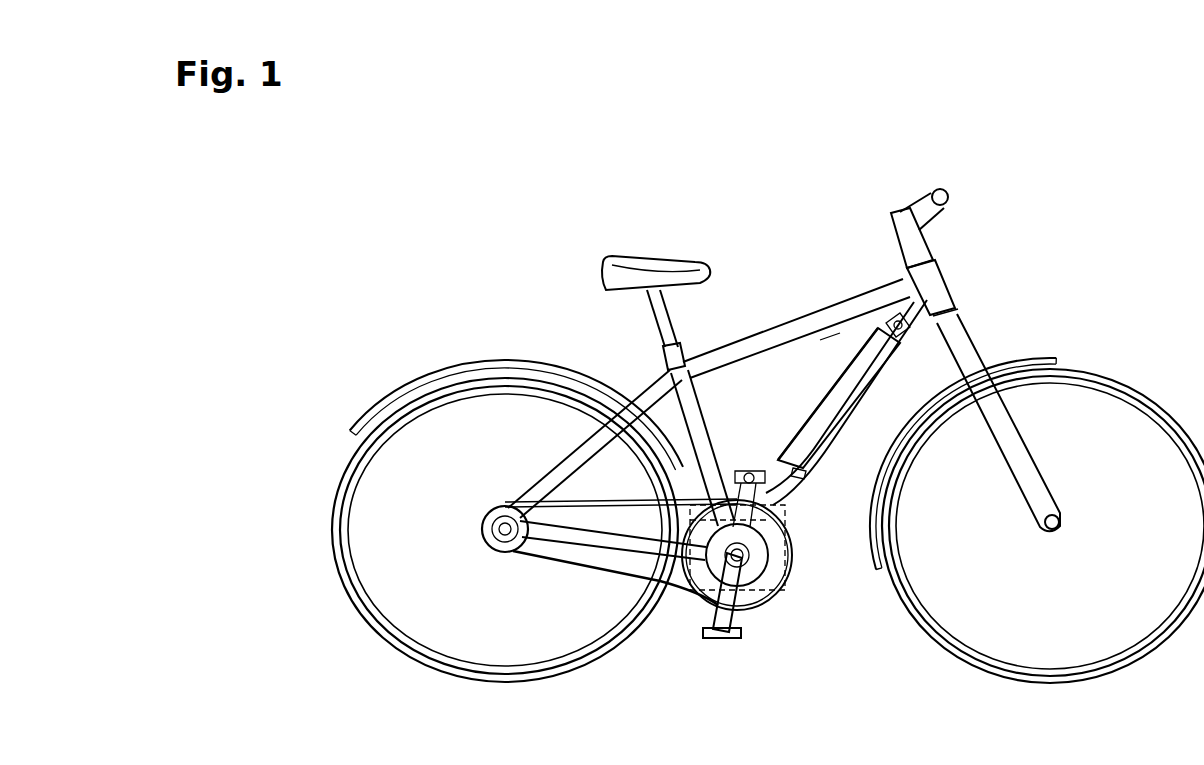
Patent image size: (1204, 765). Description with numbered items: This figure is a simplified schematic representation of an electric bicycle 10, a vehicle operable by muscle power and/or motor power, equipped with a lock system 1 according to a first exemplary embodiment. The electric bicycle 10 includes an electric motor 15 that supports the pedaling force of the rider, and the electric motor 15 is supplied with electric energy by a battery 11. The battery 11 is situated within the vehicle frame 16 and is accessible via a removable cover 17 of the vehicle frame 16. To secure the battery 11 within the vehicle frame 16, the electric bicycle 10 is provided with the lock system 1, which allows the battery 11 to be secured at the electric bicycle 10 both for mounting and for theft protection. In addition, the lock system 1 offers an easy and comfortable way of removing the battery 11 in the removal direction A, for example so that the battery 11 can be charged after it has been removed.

The electric bicycle 10 is at (463, 256).
The lock system 1 is at (875, 300).
The battery 11 is at (848, 390).
The removal direction A is at (851, 336).
The removable cover 17 is at (804, 420).
The electric motor 15 is at (785, 605).
The vehicle frame 16 is at (806, 516).